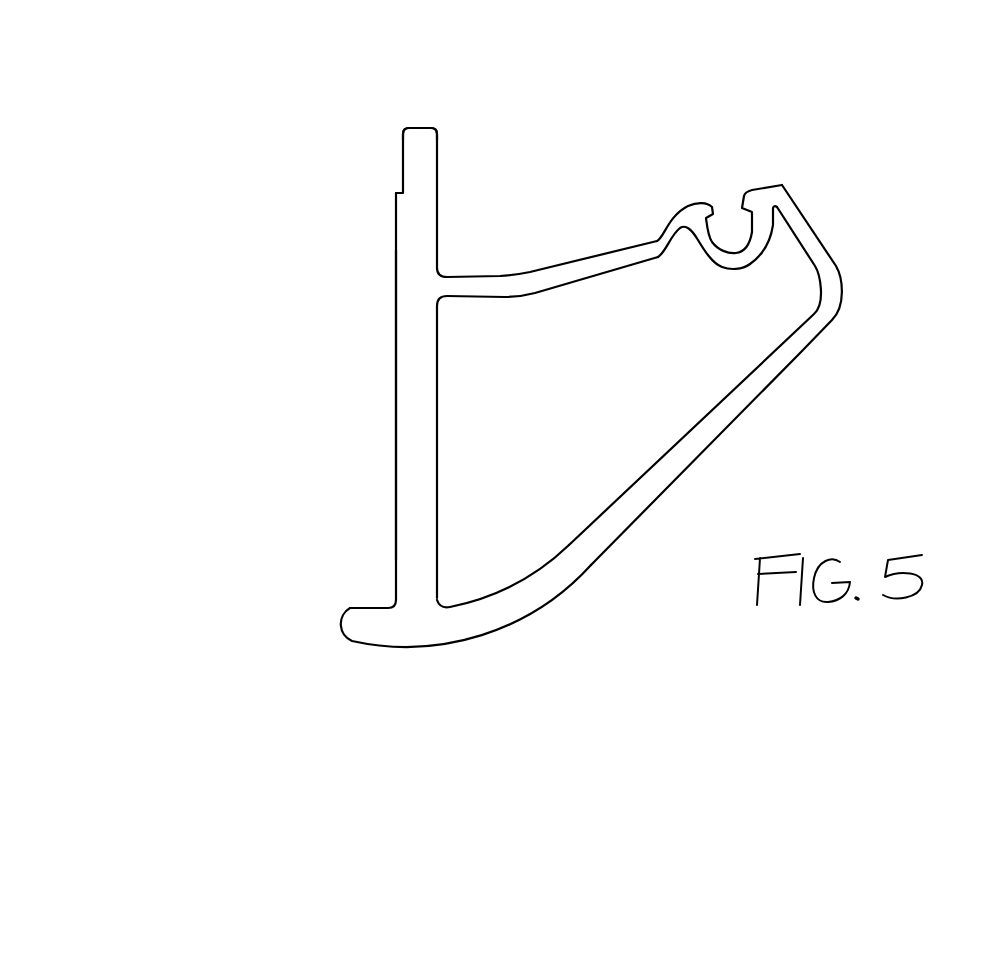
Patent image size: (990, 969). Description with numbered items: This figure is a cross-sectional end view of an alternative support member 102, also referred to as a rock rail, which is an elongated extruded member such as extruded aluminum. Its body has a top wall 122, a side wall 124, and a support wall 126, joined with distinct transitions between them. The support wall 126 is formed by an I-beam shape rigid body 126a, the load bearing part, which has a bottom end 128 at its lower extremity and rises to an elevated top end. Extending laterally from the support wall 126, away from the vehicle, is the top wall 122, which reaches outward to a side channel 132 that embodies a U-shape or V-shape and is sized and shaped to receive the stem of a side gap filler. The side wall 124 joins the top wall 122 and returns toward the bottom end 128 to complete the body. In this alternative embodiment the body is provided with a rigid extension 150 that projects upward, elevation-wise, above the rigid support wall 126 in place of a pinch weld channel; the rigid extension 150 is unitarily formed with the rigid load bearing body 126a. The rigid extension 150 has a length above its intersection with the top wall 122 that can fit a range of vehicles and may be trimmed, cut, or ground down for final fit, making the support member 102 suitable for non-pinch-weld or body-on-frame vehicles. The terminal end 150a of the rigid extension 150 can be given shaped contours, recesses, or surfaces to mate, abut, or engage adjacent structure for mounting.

The support member 102 is at (570, 384).
The top wall 122 is at (547, 234).
The side wall 124 is at (739, 375).
The support wall 126 is at (317, 396).
The I-beam shape rigid body 126a is at (285, 405).
The bottom end 128 is at (461, 648).
The side channel 132 is at (719, 179).
The rigid extension 150 is at (349, 105).
The terminal end 150a is at (499, 81).